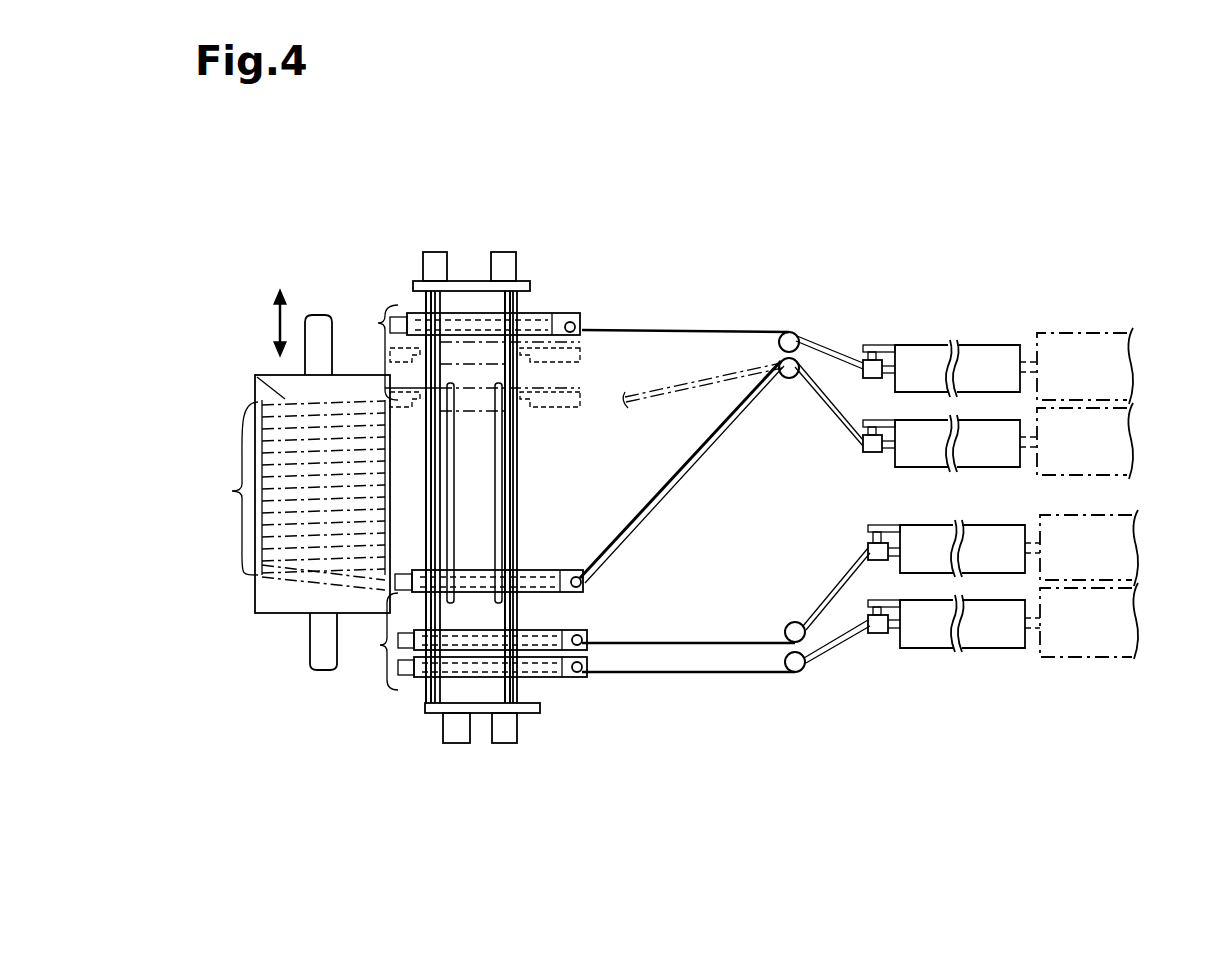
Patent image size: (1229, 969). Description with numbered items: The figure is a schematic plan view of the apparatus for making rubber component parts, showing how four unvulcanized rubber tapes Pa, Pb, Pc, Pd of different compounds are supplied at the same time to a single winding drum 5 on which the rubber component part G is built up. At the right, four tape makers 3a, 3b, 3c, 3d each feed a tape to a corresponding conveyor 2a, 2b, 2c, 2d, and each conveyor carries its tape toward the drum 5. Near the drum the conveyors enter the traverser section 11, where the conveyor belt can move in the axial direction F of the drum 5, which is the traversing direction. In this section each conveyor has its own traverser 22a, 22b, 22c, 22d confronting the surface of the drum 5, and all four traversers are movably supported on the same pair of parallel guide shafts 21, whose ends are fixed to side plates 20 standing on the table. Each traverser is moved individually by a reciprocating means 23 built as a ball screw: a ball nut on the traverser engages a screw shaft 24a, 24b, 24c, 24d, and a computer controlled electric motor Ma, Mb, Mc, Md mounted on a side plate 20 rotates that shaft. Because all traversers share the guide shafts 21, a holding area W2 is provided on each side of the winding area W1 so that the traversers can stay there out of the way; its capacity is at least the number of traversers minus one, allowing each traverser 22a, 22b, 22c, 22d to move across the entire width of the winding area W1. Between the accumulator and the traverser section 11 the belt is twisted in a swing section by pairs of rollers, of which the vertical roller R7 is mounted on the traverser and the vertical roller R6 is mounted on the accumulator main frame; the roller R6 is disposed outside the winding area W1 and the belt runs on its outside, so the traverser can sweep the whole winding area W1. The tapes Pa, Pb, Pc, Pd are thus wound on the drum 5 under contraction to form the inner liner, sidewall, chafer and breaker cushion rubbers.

The winding drum 5 is at (285, 605).
The rubber component part G is at (285, 400).
The winding area W1 is at (219, 488).
The axial direction F is at (278, 322).
The holding area W2 is at (364, 497).
The traverser section 11 is at (600, 308).
The side plate 20 is at (521, 280).
The reciprocating means 23 is at (411, 282).
The guide shaft 21 is at (433, 688).
The electric motor Mb is at (433, 252).
The electric motor Ma is at (500, 252).
The electric motor Md is at (465, 744).
The electric motor Mc is at (511, 744).
The screw shaft 24a is at (508, 424).
The screw shaft 24b is at (442, 518).
The screw shaft 24c is at (500, 453).
The screw shaft 24d is at (453, 492).
The traverser 22b is at (556, 310).
The traverser 22a is at (594, 585).
The traverser 22c is at (602, 653).
The traverser 22d is at (595, 684).
The vertical roller R7 is at (590, 577).
The vertical roller R6 is at (790, 380).
The rubber tape Pb is at (812, 348).
The rubber tape Pa is at (843, 418).
The rubber tape Pc is at (832, 613).
The rubber tape Pd is at (852, 637).
The conveyor 2b is at (925, 345).
The conveyor 2a is at (975, 418).
The conveyor 2c is at (980, 562).
The conveyor 2d is at (928, 642).
The tape maker 3b is at (1132, 366).
The tape maker 3a is at (1132, 441).
The tape maker 3c is at (1137, 548).
The tape maker 3d is at (1137, 621).